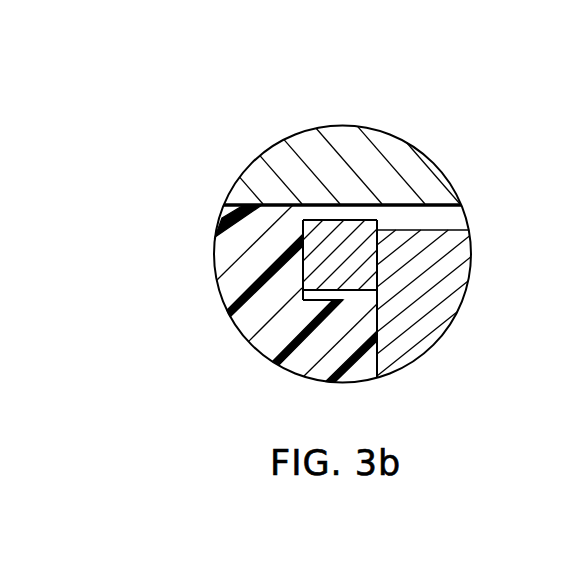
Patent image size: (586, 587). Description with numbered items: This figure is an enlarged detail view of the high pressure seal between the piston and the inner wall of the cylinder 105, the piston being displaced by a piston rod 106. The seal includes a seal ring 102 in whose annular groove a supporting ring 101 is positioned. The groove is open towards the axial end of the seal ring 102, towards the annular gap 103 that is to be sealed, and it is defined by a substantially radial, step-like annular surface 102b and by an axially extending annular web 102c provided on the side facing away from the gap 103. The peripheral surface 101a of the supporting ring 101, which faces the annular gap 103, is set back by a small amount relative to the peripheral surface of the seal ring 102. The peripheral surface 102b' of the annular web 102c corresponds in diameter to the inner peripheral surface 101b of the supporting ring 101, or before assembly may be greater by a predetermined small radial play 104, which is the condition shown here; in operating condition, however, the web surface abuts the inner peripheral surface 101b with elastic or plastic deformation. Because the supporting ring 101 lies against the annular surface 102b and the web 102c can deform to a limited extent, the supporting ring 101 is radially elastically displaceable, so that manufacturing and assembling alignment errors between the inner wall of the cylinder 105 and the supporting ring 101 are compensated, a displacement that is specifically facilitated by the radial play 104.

The supporting ring 101 is at (337, 232).
The peripheral surface of supporting ring 101a is at (362, 218).
The inner peripheral surface of supporting ring 101b is at (320, 335).
The seal ring 102 is at (245, 269).
The radial annular surface 102b is at (183, 227).
The peripheral surface of annular web 102b' is at (393, 341).
The annular web 102c is at (348, 345).
The annular gap 103 is at (314, 210).
The radial play 104 is at (247, 337).
The cylinder 105 is at (424, 182).
The piston rod 106 is at (443, 273).